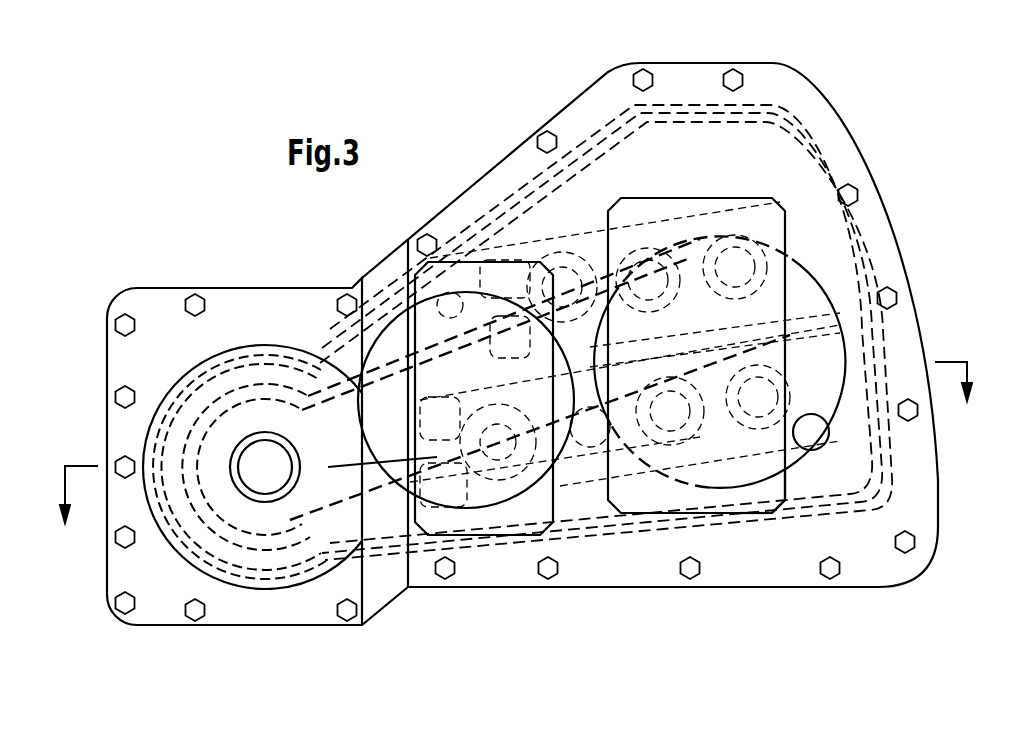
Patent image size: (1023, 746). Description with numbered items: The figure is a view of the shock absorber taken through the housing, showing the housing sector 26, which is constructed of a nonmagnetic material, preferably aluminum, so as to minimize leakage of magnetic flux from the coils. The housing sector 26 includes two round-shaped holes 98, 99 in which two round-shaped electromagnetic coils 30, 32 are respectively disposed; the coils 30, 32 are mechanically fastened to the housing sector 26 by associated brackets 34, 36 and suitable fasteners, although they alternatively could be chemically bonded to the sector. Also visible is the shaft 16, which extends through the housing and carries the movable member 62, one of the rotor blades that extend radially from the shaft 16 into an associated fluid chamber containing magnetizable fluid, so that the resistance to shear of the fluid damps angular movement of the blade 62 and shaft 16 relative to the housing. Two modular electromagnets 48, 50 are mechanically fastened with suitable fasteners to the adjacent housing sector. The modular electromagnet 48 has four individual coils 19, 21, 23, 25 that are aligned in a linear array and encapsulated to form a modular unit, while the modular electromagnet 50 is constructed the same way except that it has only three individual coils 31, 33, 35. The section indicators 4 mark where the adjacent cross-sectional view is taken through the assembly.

The section line 4- 4 is at (520, 454).
The shaft 16 is at (257, 477).
The individual coil 19 is at (499, 490).
The individual coil 21 is at (597, 500).
The individual coil 23 is at (722, 460).
The individual coil 25 is at (773, 510).
The housing sector 26 is at (162, 317).
The electromagnetic coil 30 is at (368, 420).
The individual coil 31 is at (563, 257).
The electromagnetic coil 32 is at (803, 447).
The individual coil 33 is at (633, 240).
The bracket 34 is at (557, 500).
The individual coil 35 is at (750, 227).
The bracket 36 is at (787, 477).
The modular electromagnet 48 is at (753, 437).
The modular electromagnet 50 is at (710, 217).
The movable member 62 is at (435, 312).
The round-shaped hole 98 is at (453, 307).
The round-shaped hole 99 is at (822, 421).